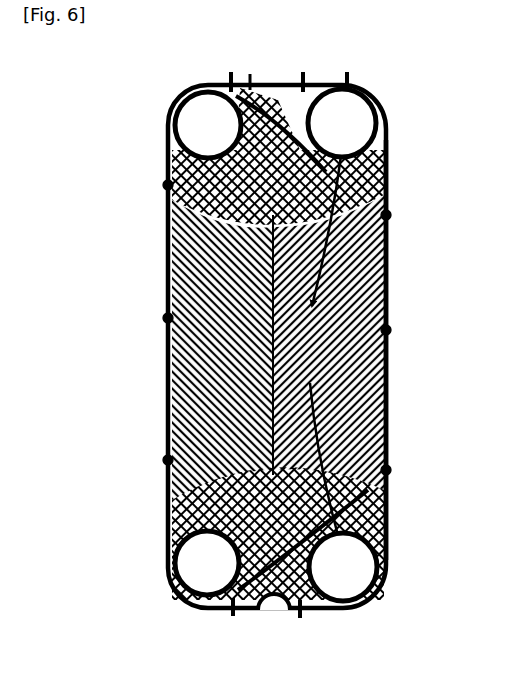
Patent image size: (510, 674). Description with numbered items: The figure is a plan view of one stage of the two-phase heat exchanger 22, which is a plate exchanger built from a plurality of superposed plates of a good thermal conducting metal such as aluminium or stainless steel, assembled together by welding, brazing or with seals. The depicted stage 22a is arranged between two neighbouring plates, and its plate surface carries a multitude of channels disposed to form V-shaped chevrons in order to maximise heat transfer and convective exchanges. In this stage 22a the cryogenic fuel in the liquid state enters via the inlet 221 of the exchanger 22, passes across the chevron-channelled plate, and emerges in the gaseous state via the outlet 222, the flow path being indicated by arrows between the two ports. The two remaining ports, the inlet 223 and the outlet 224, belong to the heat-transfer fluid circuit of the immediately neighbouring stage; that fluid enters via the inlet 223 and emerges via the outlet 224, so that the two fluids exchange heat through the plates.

The two-phase heat exchanger 22 is at (84, 315).
The stage 22a is at (386, 355).
The inlet 221 is at (383, 92).
The outlet 222 is at (385, 600).
The inlet 223 is at (170, 600).
The outlet 224 is at (172, 92).